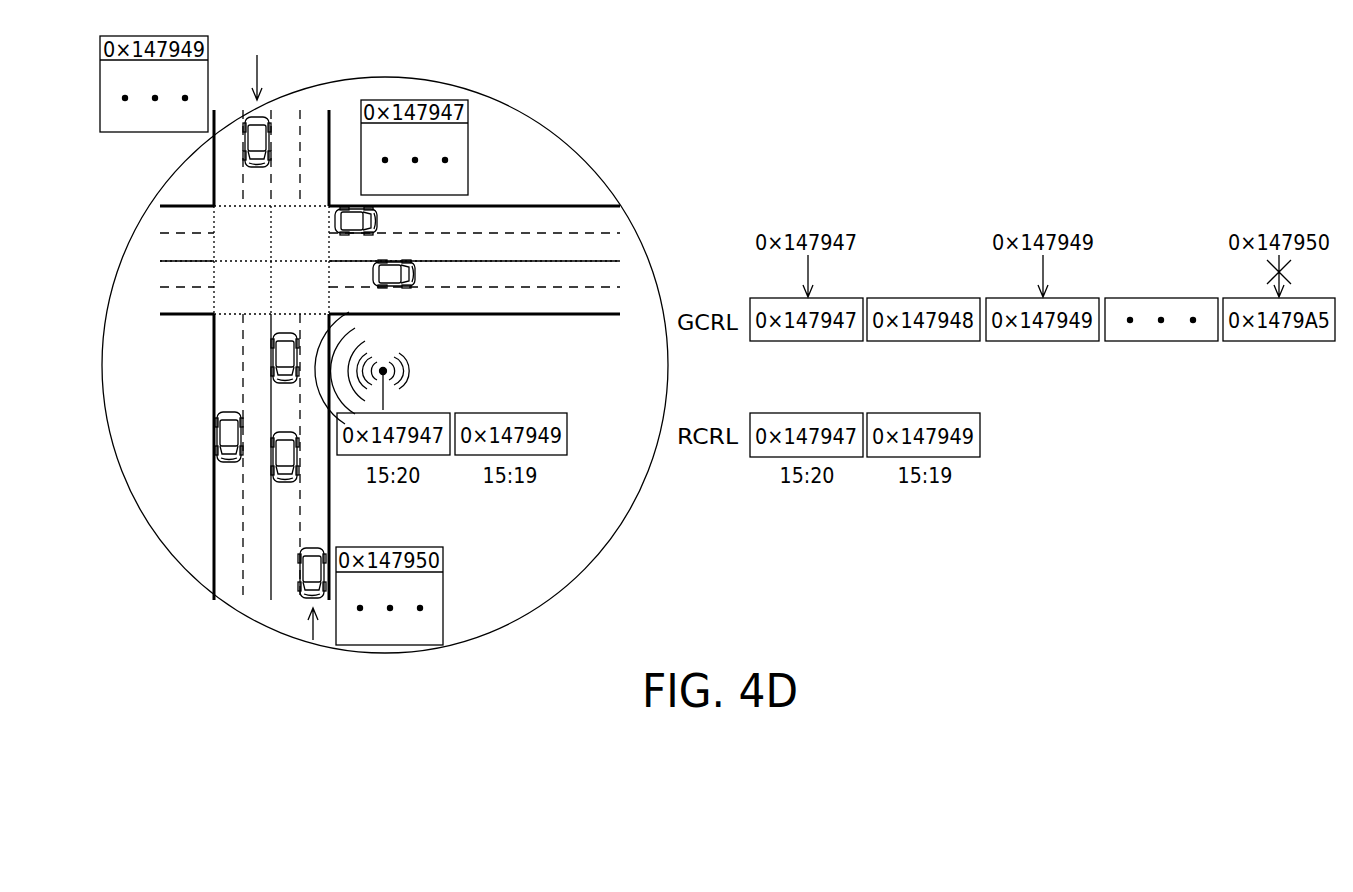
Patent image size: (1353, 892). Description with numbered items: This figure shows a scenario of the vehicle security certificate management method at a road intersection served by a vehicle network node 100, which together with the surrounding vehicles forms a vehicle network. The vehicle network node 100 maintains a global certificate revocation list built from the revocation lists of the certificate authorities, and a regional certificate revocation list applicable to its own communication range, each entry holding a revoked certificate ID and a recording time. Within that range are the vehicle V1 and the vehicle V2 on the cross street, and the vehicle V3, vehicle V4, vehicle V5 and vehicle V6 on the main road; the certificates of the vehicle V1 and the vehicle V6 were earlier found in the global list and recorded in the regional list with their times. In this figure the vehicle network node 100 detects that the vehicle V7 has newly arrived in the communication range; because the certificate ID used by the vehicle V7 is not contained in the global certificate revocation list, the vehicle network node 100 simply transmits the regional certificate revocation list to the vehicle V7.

The vehicle network node 100 is at (407, 371).
The vehicle V1 is at (378, 220).
The vehicle V2 is at (416, 273).
The vehicle V3 is at (285, 384).
The vehicle V4 is at (285, 482).
The vehicle V5 is at (229, 462).
The vehicle V6 is at (257, 168).
The vehicle V7 is at (312, 548).